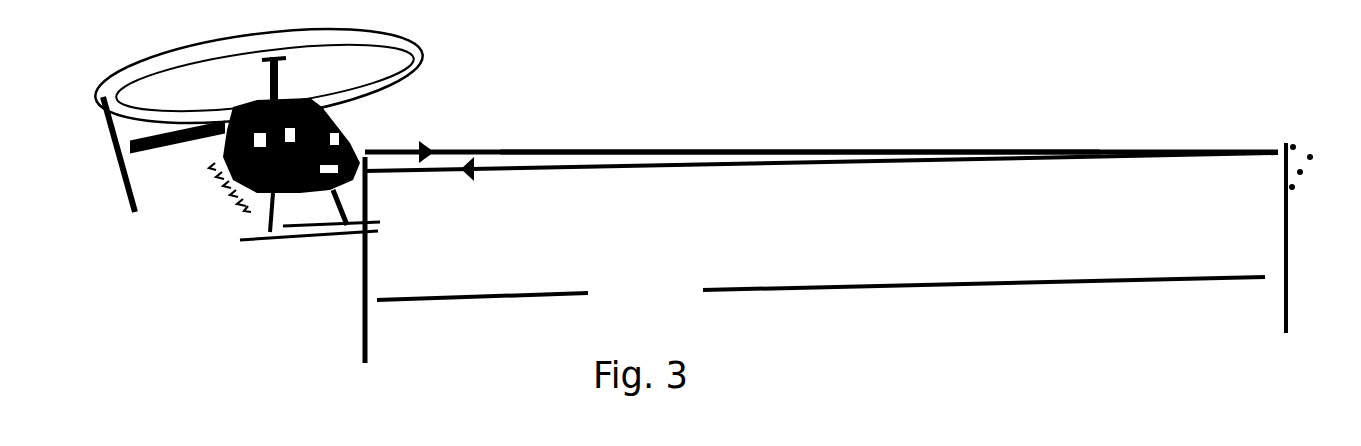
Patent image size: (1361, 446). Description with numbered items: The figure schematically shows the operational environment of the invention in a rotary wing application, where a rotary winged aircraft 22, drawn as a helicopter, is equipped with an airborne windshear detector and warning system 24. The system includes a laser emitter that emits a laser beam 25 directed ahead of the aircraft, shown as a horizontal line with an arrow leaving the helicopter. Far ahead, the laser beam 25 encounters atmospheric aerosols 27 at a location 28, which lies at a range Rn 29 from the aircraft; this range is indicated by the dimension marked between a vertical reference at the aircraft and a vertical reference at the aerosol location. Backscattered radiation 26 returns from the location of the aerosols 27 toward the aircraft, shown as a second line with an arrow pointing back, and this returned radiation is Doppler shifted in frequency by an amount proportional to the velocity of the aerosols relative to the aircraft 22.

The rotary winged aircraft 22 is at (200, 173).
The airborne windshear detector and warning system 24 is at (394, 142).
The laser beam 25 is at (512, 143).
The backscattered radiation 26 is at (442, 176).
The atmospheric aerosols 27 is at (1292, 140).
The location 28 is at (1258, 148).
The range Rn 29 is at (603, 305).